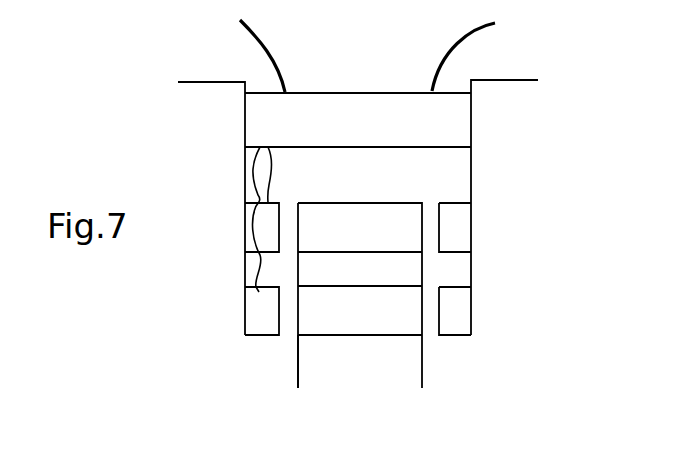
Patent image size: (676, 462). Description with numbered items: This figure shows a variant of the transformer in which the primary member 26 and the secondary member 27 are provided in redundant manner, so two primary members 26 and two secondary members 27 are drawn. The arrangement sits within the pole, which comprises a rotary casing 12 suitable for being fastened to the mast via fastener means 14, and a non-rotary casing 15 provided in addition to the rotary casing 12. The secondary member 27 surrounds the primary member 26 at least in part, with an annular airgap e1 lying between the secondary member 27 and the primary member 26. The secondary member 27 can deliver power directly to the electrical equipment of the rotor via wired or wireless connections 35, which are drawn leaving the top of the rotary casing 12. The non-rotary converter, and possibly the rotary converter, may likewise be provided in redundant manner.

The fastener means 14 is at (208, 82).
The wired or wireless connections 35 is at (256, 33).
The rotary casing 12 is at (245, 167).
The secondary member 27 is at (466, 228).
The primary member 26 is at (360, 295).
The non-rotary casing 15 is at (298, 352).
The annular airgap e1 is at (433, 338).